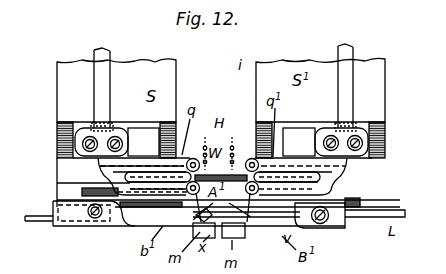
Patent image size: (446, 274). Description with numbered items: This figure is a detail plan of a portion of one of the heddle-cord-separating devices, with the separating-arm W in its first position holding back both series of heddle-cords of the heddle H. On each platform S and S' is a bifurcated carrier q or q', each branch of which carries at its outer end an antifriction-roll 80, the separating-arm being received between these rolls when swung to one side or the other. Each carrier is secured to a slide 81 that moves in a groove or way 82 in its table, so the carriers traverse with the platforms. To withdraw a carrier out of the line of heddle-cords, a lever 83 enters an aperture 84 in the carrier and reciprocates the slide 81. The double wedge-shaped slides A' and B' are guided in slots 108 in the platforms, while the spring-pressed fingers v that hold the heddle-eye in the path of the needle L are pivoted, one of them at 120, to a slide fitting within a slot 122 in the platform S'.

The antifriction-roll 80 is at (200, 156).
The slide 81 is at (221, 142).
The groove or way 82 is at (169, 120).
The lever 83 is at (108, 85).
The aperture 84 is at (109, 124).
The slot 108 is at (82, 190).
The pivot 120 is at (319, 227).
The slot 122 is at (362, 200).